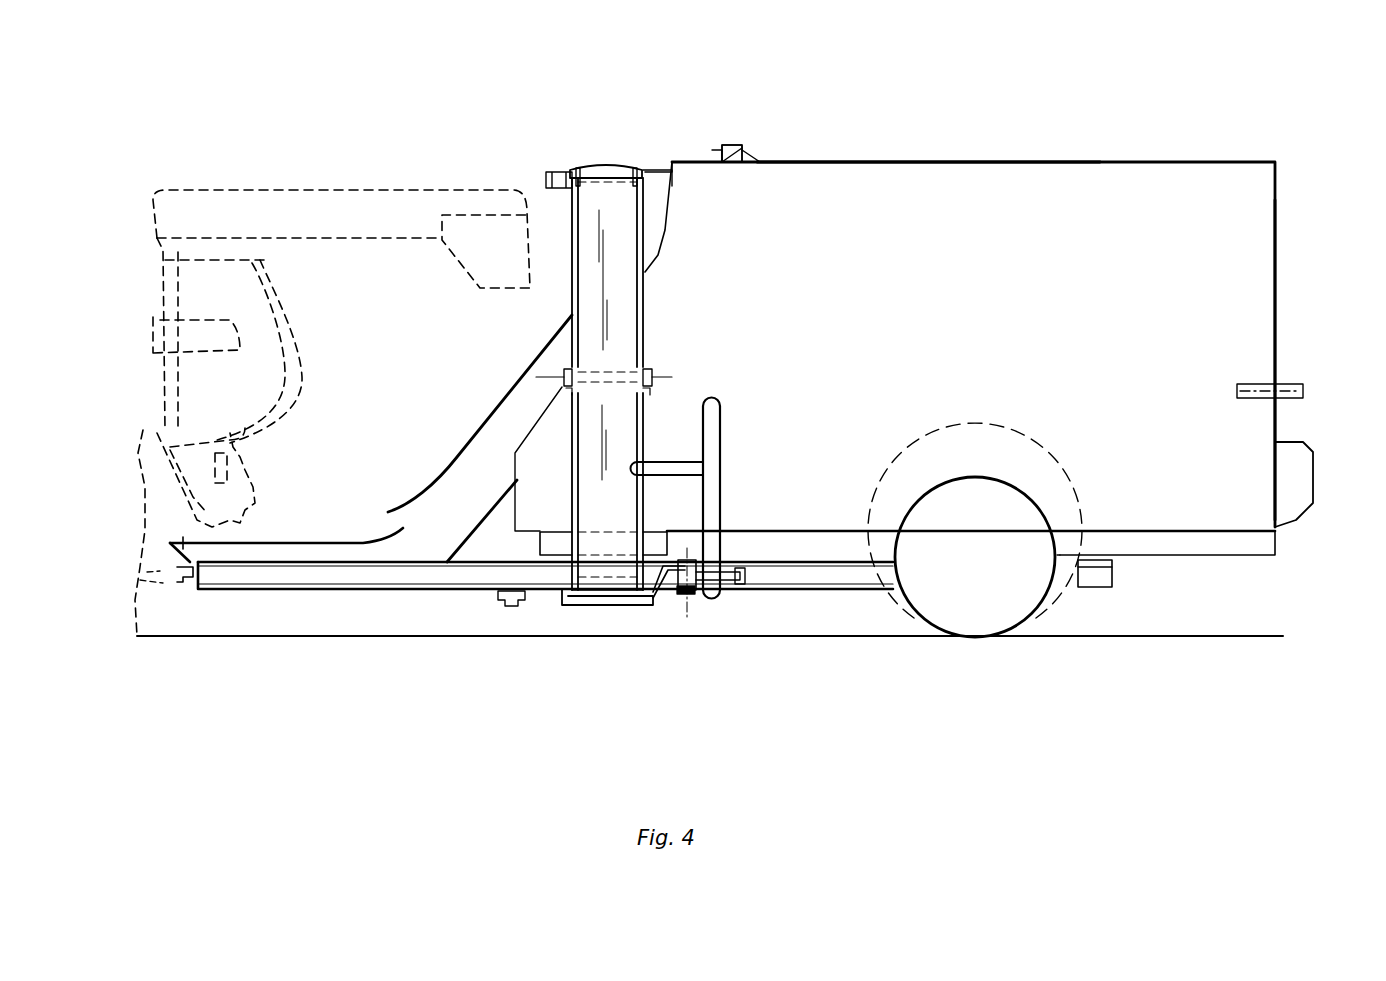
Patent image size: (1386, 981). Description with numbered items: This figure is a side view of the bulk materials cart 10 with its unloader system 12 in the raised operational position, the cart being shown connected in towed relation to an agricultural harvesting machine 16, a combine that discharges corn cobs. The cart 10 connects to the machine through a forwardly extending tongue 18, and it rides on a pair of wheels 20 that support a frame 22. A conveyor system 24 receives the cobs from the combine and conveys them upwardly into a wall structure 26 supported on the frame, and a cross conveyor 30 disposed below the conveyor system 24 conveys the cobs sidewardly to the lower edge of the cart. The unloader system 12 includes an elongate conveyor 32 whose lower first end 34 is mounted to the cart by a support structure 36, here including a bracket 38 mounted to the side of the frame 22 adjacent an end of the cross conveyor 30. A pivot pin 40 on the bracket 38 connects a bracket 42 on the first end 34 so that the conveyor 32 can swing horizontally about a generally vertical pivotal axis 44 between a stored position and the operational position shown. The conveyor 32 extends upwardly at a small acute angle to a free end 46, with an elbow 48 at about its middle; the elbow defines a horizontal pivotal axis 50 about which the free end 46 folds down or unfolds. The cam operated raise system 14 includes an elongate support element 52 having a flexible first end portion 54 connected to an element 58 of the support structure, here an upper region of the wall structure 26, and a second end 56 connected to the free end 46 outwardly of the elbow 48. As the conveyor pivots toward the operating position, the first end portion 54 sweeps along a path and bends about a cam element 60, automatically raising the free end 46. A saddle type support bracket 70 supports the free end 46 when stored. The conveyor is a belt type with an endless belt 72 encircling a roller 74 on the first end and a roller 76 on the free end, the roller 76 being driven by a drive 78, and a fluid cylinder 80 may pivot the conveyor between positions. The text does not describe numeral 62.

The bulk materials cart 10 is at (1280, 157).
The unloader system 12 is at (597, 162).
The cam operated raise system 14 is at (734, 148).
The cam element 60 is at (732, 153).
The agricultural harvesting machine 16 is at (285, 188).
The tongue 18 is at (236, 592).
The wheels 20 is at (1032, 640).
The frame 22 is at (1098, 588).
The conveyor system 24 is at (464, 448).
The wall structure 26 is at (1277, 249).
The cross conveyor 30 is at (540, 550).
The elongate conveyor 32 is at (645, 301).
The lower first end 34 is at (545, 578).
The support structure 36 is at (722, 497).
The bracket 38 is at (718, 604).
The pivot pin 40 is at (685, 604).
The bracket 42 is at (660, 598).
The pivotal axis 44 is at (693, 614).
The free end 46 is at (574, 167).
The elbow 48 is at (652, 378).
The horizontal pivotal axis 50 is at (668, 380).
The elongate support element 52 is at (658, 166).
The flexible first end portion 54 is at (712, 162).
The second end 56 is at (620, 172).
The element of support structure 58 is at (757, 162).
The latch 62 is at (748, 155).
The saddle type support bracket 70 is at (1303, 392).
The endless belt 72 is at (625, 214).
The roller 74 is at (612, 577).
The roller 76 is at (650, 177).
The drive 78 is at (547, 181).
The fluid cylinder 80 is at (552, 594).